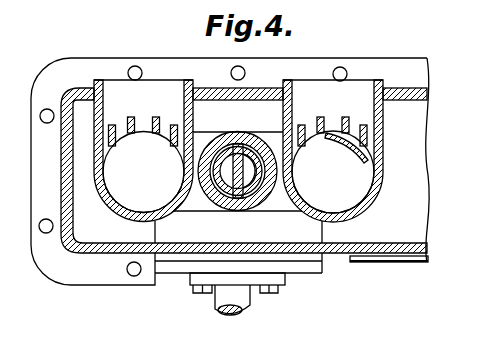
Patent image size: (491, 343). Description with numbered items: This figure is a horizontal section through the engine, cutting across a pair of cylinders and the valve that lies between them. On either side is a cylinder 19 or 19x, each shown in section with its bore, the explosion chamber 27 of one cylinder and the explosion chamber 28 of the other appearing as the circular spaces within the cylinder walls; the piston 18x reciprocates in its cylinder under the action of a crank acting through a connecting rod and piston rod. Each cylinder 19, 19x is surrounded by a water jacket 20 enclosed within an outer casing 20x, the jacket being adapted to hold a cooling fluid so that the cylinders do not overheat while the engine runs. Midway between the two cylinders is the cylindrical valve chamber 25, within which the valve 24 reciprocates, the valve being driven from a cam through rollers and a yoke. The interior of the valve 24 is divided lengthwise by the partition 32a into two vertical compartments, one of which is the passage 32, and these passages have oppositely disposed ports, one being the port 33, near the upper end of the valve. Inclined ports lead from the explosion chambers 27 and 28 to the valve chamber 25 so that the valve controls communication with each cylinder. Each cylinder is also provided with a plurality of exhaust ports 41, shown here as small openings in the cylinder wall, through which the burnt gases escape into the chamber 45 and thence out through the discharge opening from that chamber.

The piston 18x is at (358, 162).
The cylinder 19 is at (122, 214).
The cylinder 19x is at (361, 210).
The water jacket 20 is at (378, 237).
The outer casing 20x is at (333, 258).
The valve 24 is at (229, 146).
The cylindrical valve chamber 25 is at (255, 145).
The explosion chamber 27 is at (118, 187).
The explosion chamber 28 is at (377, 188).
The passage 32 is at (207, 148).
The partition 32a is at (221, 206).
The port 33 is at (258, 206).
The exhaust ports 41 is at (139, 121).
The chamber 45 is at (163, 89).